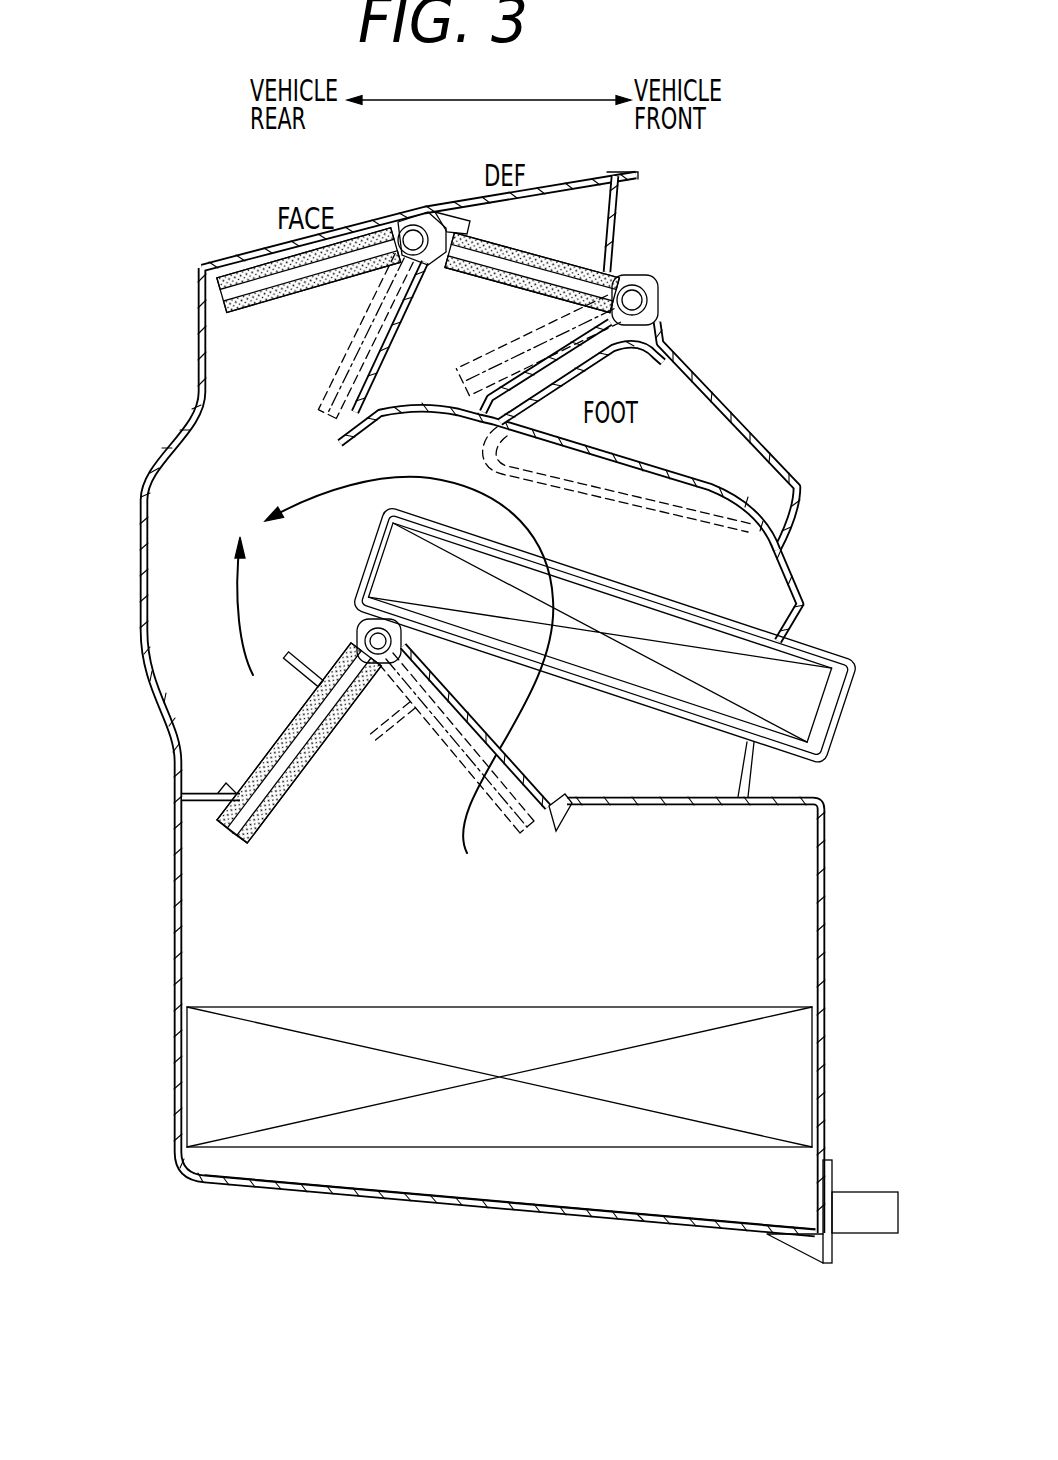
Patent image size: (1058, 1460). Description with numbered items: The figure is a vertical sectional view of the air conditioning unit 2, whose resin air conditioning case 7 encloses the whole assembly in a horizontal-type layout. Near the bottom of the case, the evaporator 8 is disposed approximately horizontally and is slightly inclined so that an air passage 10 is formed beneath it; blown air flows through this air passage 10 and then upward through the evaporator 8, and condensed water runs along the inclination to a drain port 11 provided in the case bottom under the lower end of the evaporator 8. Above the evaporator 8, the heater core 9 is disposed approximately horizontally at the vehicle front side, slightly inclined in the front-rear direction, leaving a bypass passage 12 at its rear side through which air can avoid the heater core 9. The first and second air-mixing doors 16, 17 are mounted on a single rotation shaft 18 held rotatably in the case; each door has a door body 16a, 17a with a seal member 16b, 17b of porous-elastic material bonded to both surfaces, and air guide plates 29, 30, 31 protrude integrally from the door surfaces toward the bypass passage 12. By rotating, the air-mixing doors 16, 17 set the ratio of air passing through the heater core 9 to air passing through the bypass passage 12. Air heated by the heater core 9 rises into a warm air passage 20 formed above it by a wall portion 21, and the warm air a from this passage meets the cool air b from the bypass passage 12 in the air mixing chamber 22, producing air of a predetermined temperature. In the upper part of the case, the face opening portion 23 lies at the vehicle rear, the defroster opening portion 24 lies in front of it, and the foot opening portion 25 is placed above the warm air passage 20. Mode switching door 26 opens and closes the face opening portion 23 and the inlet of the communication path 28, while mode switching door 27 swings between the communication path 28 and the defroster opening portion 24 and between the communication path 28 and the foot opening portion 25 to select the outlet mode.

The air conditioning unit 2 is at (460, 704).
The air conditioning case 7 is at (142, 537).
The evaporator 8 is at (470, 1125).
The heater core 9 is at (790, 687).
The air passage 10 is at (533, 1170).
The drain port 11 is at (863, 1223).
The bypass passage 12 is at (262, 710).
The first air-mixing door 16 is at (298, 787).
The second air-mixing door 17 is at (298, 787).
The door body 16a is at (155, 860).
The door body 17a is at (235, 833).
The seal member 16b is at (148, 815).
The seal member 17b is at (227, 820).
The rotation shaft 18 is at (347, 632).
The warm air passage 20 is at (650, 557).
The wall portion 21 is at (660, 460).
The air mixing chamber 22 is at (252, 473).
The face opening portion 23 is at (250, 262).
The defroster opening portion 24 is at (573, 182).
The foot opening portion 25 is at (637, 370).
The mode switching door 26 is at (303, 282).
The mode switching door 27 is at (545, 258).
The communication path 28 is at (448, 318).
The air guide plate 29 is at (240, 713).
The air guide plate 30 is at (240, 713).
The air guide plate 31 is at (293, 683).
The warm air a is at (287, 497).
The cool air b is at (233, 603).